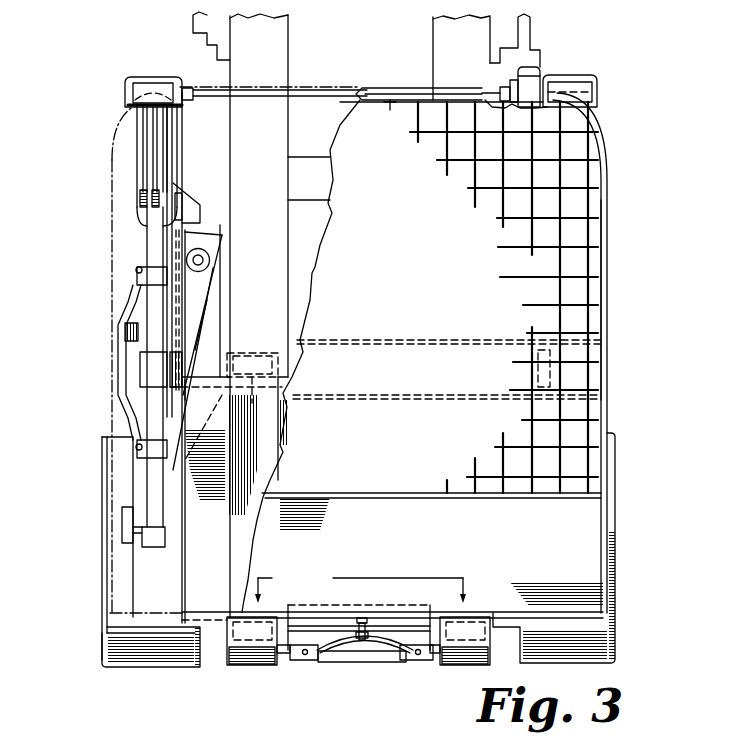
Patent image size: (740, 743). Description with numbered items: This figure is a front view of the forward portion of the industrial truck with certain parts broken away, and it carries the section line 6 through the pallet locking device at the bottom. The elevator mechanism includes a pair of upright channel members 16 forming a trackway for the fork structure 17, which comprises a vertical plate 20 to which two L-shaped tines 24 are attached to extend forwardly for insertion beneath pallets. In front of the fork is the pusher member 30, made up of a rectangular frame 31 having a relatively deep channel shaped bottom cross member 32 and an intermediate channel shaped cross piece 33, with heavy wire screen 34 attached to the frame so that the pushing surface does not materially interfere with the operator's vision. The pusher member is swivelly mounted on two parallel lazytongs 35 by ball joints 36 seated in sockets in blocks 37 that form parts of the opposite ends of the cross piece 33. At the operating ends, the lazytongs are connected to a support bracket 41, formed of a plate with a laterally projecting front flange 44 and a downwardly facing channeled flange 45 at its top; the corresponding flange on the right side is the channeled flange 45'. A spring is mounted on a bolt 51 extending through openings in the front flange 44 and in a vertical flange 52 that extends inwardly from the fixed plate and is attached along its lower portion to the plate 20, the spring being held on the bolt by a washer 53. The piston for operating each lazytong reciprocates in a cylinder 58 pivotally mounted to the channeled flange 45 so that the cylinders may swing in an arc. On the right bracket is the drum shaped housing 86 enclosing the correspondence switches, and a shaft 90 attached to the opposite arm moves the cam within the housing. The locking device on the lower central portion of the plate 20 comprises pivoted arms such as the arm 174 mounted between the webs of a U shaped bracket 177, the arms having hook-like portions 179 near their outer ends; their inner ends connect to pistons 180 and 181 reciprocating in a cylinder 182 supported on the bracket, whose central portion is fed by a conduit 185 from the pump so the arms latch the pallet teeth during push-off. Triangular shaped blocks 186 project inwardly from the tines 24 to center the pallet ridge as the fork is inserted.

The upright channel members 16 is at (433, 52).
The fork structure 17 is at (260, 494).
The vertical plate 20 is at (213, 607).
The L-shaped tines 24 is at (358, 648).
The pusher member 30 is at (612, 236).
The rectangular frame 31 is at (602, 300).
The bottom cross member 32 is at (580, 518).
The intermediate cross piece 33 is at (593, 350).
The wire screen 34 is at (563, 180).
The lazytongs 35 is at (135, 249).
The ball joints 36 is at (173, 353).
The blocks 37 is at (190, 365).
The support bracket 41 is at (178, 137).
The front flange 44 is at (200, 323).
The channeled flange 45 is at (153, 70).
The channeled flange 45' is at (583, 74).
The bolt 51 is at (204, 261).
The vertical flange 52 is at (213, 333).
The washer 53 is at (213, 243).
The cylinder 58 is at (138, 147).
The housing 86 is at (537, 67).
The shaft 90 is at (275, 96).
The arm 174 is at (307, 658).
The U shaped bracket 177 is at (400, 637).
The hook-like portions 179 is at (417, 653).
The piston 180 is at (399, 673).
The piston 181 is at (315, 660).
The cylinder 182 is at (387, 662).
The conduit 185 is at (367, 623).
The triangular shaped blocks 186 is at (288, 612).
The section line 6- 6 is at (366, 595).